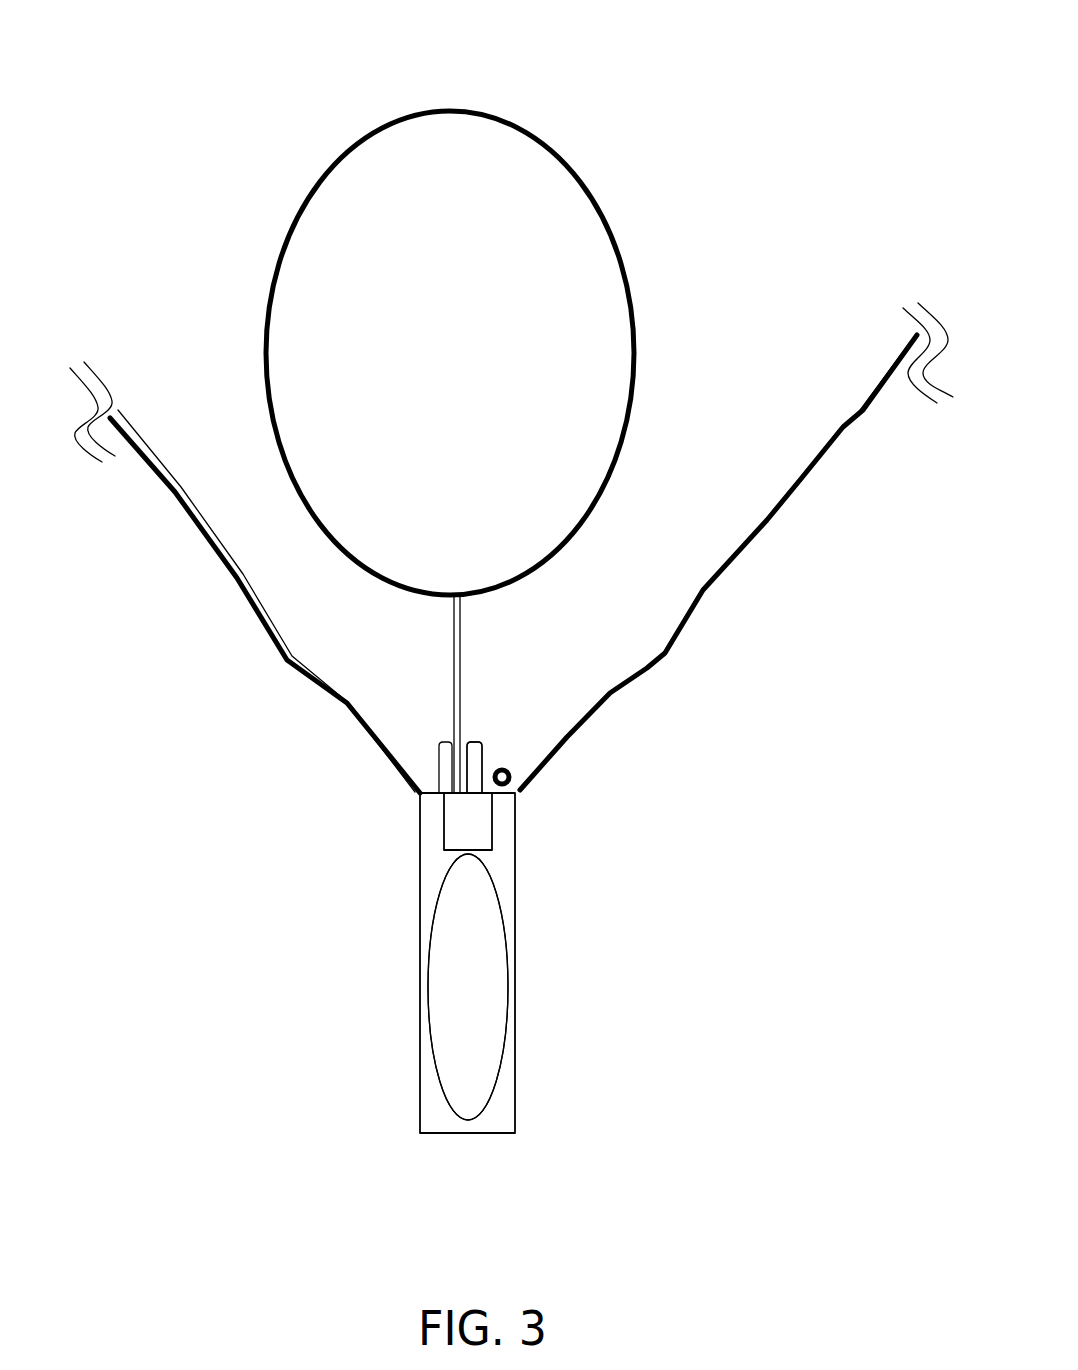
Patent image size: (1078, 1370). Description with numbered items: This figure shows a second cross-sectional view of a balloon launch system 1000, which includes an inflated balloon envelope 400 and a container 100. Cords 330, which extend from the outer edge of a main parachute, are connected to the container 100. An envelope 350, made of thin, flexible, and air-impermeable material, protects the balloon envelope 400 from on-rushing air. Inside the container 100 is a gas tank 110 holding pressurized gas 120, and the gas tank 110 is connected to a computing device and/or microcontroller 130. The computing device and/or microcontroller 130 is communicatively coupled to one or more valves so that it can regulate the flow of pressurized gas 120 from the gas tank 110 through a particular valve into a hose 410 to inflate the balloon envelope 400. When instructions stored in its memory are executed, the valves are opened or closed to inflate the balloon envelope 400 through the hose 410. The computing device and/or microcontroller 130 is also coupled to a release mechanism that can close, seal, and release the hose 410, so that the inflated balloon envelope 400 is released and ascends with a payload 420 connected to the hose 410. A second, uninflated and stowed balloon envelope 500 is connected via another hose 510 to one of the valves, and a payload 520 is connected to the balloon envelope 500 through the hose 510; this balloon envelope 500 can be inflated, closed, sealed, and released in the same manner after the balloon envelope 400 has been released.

The balloon launch system 1000 is at (170, 34).
The container 100 is at (520, 1105).
The gas tank 110 is at (430, 920).
The pressurized gas 120 is at (458, 983).
The computing device and/or microcontroller 130 is at (492, 825).
The cords 330 is at (303, 657).
The envelope 350 is at (192, 542).
The inflated balloon envelope 400 is at (340, 160).
The hose 410 is at (453, 668).
The payload 420 is at (440, 760).
The uninflated and stowed balloon envelope 500 is at (530, 783).
The hose 510 is at (485, 788).
The payload 520 is at (474, 772).